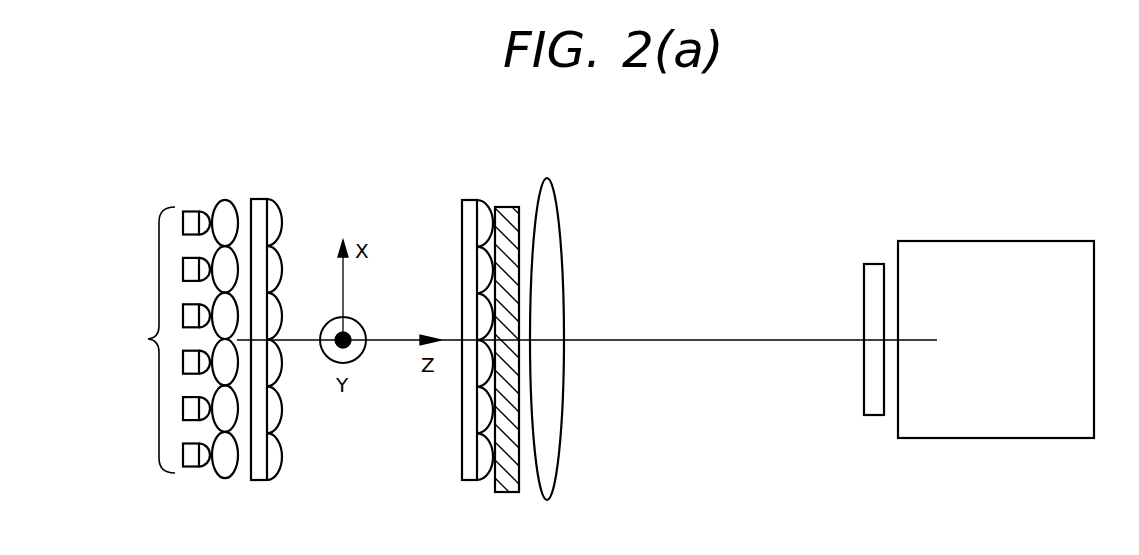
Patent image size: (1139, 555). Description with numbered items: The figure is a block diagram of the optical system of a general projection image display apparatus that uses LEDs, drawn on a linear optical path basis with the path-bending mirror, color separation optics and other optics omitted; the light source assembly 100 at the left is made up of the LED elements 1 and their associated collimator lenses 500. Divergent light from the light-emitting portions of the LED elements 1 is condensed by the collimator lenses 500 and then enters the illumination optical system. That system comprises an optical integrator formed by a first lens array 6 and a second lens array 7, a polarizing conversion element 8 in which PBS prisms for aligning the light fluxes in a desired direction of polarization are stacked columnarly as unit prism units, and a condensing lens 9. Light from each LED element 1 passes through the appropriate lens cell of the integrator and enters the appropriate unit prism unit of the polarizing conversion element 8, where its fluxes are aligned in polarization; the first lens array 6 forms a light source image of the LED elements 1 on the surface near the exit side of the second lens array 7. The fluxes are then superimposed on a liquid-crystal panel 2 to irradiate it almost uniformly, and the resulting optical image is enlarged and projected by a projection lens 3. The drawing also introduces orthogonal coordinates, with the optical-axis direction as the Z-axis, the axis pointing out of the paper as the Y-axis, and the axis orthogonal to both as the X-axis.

The light source unit 100 is at (139, 340).
The LED element 1 is at (190, 215).
The collimator lens 500 is at (224, 208).
The first lens array 6 is at (263, 205).
The second lens array 7 is at (470, 208).
The polarizing conversion element 8 is at (503, 213).
The condensing lens 9 is at (548, 212).
The liquid-crystal panel 2 is at (874, 272).
The projection lens 3 is at (992, 255).